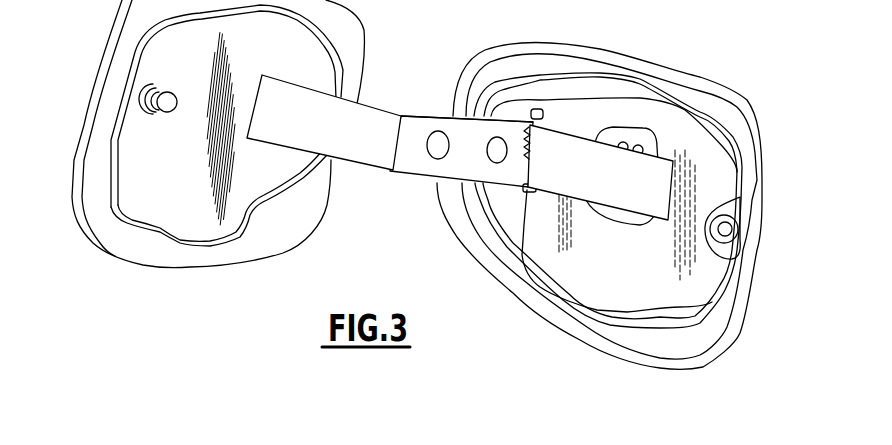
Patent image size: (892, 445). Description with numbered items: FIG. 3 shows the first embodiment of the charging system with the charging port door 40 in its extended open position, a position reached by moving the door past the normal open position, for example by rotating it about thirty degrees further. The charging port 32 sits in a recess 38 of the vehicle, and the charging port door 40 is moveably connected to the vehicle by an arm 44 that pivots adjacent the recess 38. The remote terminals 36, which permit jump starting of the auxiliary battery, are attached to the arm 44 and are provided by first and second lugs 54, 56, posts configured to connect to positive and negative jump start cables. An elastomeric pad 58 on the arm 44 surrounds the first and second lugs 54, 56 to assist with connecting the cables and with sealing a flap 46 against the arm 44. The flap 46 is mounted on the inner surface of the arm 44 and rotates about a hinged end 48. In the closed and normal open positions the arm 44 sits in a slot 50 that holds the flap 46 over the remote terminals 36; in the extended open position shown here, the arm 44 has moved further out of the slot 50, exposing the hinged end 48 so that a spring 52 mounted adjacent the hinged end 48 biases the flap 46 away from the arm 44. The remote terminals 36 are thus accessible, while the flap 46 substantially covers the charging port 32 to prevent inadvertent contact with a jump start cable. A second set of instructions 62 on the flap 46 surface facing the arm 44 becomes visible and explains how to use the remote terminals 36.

The charging port 32 is at (650, 128).
The remote terminals 36 is at (438, 114).
The recess 38 is at (723, 173).
The charging port door 40 is at (98, 63).
The arm 44 is at (385, 108).
The flap 46 is at (572, 193).
The hinged end 48 is at (518, 296).
The slot 50 is at (537, 110).
The spring 52 is at (525, 188).
The first lug 54 is at (437, 158).
The second lug 56 is at (487, 158).
The elastomeric pad 58 is at (405, 158).
The second set of instructions 62 is at (624, 217).